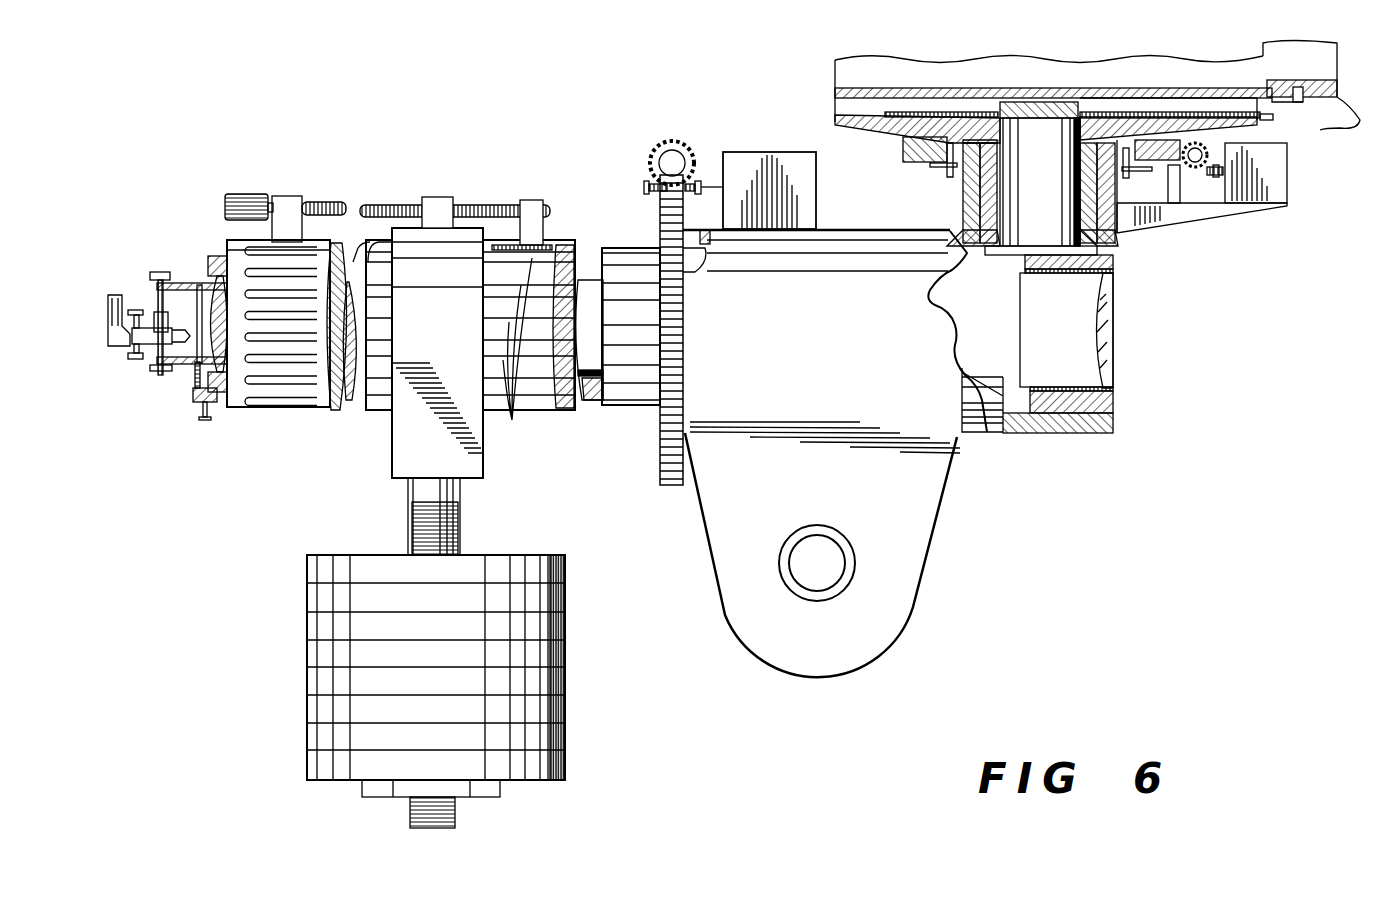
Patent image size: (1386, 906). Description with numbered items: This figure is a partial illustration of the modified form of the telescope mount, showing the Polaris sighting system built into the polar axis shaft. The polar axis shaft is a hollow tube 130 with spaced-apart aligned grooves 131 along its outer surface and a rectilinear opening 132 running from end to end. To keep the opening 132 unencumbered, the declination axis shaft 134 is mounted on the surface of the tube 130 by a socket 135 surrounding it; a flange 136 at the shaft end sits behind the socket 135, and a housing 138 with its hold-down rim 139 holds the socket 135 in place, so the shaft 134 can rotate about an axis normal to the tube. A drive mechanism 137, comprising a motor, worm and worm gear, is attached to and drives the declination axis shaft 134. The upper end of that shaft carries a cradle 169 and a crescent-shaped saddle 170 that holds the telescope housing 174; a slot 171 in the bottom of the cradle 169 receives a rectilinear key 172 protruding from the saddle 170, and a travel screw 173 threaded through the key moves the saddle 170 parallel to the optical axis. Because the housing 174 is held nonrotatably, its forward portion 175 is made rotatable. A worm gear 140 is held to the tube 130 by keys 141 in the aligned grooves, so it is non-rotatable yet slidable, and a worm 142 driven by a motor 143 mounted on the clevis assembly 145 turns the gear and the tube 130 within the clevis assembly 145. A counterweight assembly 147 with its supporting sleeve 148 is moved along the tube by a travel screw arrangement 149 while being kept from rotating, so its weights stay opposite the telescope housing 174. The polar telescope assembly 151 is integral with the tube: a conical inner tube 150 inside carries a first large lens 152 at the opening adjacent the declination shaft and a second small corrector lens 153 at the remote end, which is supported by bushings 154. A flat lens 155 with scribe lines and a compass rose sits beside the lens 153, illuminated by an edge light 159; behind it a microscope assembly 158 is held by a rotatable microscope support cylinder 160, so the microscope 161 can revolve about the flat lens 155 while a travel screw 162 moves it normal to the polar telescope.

The hollow tube 130 is at (628, 247).
The grooves 131 is at (470, 339).
The rectilinear opening 132 is at (1114, 278).
The declination axis shaft 134 is at (1040, 174).
The socket 135 is at (966, 211).
The flange 136 is at (1020, 246).
The drive mechanism 137 is at (1287, 193).
The housing 138 is at (966, 197).
The hold-down rim 139 is at (972, 141).
The worm gear 140 is at (662, 228).
The keys 141 is at (692, 260).
The worm 142 is at (671, 150).
The motor 143 is at (732, 152).
The clevis assembly 145 is at (928, 552).
The counterweight assembly 147 is at (567, 628).
The supporting sleeve 148 is at (483, 462).
The travel screw arrangement 149 is at (483, 192).
The inner tube 150 is at (178, 364).
The polar telescope assembly 151 is at (159, 220).
The first large lens 152 is at (1105, 363).
The second small corrector lens 153 is at (223, 334).
The bushings 154 is at (221, 286).
The flat lens 155 is at (195, 303).
The microscope assembly 158 is at (129, 382).
The edge light 159 is at (194, 364).
The microscope support cylinder 160 is at (157, 278).
The microscope 161 is at (113, 338).
The travel screw 162 is at (158, 302).
The cradle 169 is at (895, 130).
The crescent-shaped saddle 170 is at (1122, 92).
The slot 171 is at (857, 105).
The rectilinear key 172 is at (1055, 108).
The travel screw 173 is at (1270, 122).
The telescope housing 174 is at (1223, 92).
The forward portion 175 is at (1340, 119).